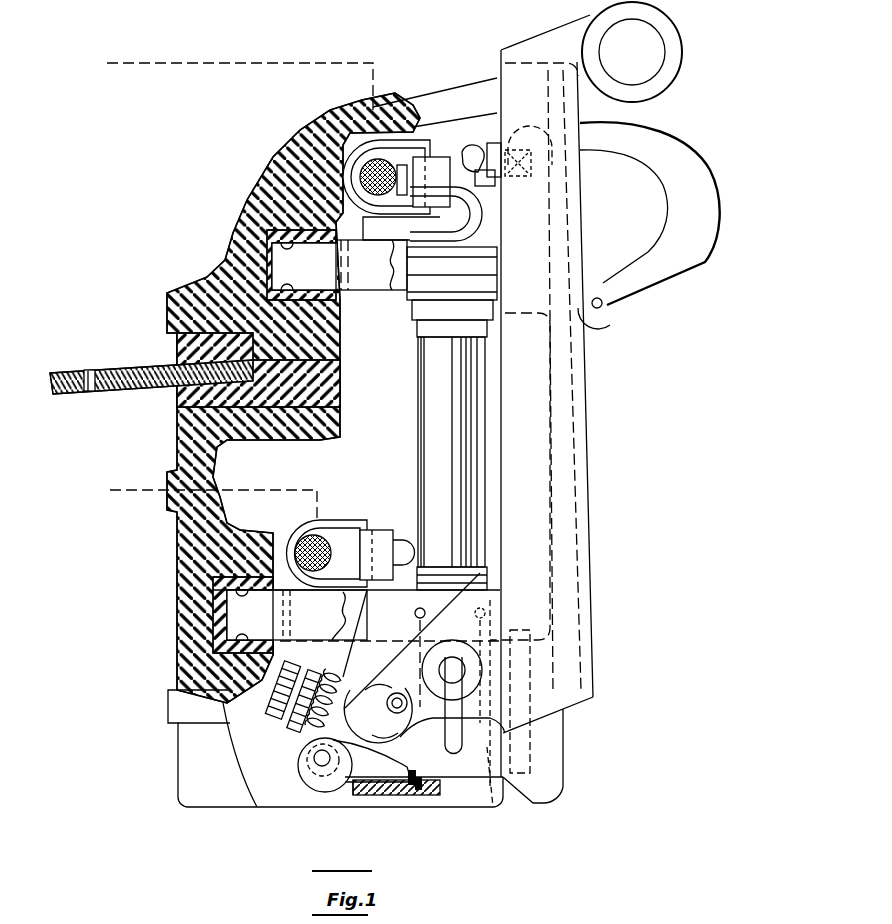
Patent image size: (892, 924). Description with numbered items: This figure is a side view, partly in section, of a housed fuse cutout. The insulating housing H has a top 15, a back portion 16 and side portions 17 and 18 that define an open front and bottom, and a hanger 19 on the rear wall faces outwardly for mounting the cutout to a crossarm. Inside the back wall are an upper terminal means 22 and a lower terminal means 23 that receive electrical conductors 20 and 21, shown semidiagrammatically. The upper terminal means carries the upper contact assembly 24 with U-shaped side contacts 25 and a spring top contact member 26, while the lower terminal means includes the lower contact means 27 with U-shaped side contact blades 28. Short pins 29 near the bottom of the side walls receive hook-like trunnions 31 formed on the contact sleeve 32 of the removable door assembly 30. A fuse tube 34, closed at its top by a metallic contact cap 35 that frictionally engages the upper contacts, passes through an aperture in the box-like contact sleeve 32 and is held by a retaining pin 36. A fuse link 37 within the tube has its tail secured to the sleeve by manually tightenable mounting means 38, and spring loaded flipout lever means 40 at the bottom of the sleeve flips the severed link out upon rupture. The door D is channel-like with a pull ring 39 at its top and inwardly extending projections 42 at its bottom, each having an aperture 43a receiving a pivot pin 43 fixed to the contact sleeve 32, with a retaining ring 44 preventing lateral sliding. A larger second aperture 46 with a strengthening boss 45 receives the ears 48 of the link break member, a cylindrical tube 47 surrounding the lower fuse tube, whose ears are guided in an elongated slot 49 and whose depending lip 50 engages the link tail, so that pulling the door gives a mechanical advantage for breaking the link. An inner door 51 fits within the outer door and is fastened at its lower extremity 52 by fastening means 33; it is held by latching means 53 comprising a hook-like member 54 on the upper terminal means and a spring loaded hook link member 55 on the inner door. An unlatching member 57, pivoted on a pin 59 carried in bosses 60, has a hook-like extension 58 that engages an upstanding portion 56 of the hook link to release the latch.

The top 15 is at (445, 86).
The back portion 16 is at (185, 447).
The side portion 17 is at (183, 750).
The side portion 18 is at (253, 771).
The hanger 19 is at (125, 388).
The electrical conductor 20 is at (240, 62).
The electrical conductor 21 is at (136, 492).
The upper terminal means 22 is at (411, 141).
The lower terminal means 23 is at (337, 521).
The upper contact assembly 24 is at (373, 294).
The side contacts 25 is at (399, 278).
The spring top contact member 26 is at (486, 216).
The lower contact means 27 is at (322, 646).
The side contact blades 28 is at (352, 613).
The pins 29 is at (306, 784).
The removable door assembly 30 is at (596, 642).
The hook-like trunnions 31 is at (322, 795).
The contact sleeve 32 is at (355, 665).
The fastening means 33 is at (532, 765).
The fuse tube 34 is at (470, 436).
The metallic contact cap 35 is at (468, 272).
The retaining pin 36 is at (418, 607).
The fuse link 37 is at (393, 797).
The mounting means 38 is at (280, 705).
The pull ring 39 is at (682, 60).
The flipout lever means 40 is at (362, 796).
The inwardly extending projections 42 is at (390, 680).
The pivot pins 43 is at (388, 708).
The aperture 43a is at (390, 724).
The retaining ring 44 is at (385, 692).
The strengthening boss 45 is at (475, 616).
The second aperture 46 is at (450, 688).
The cylindrical tube 47 is at (493, 808).
The ears 48 is at (452, 657).
The elongated slot 49 is at (448, 745).
The depending lip 50 is at (418, 792).
The inner door 51 is at (552, 487).
The lower extremity 52 is at (565, 738).
The latching means 53 is at (478, 142).
The hook-like member 54 is at (490, 186).
The hook link member 55 is at (465, 155).
The upstanding portion 56 is at (535, 170).
The unlatching member 57 is at (690, 152).
The hook-like extension 58 is at (555, 143).
The pin 59 is at (603, 307).
The bosses 60 is at (598, 327).
The insulating housing H is at (224, 253).
The door D is at (590, 437).